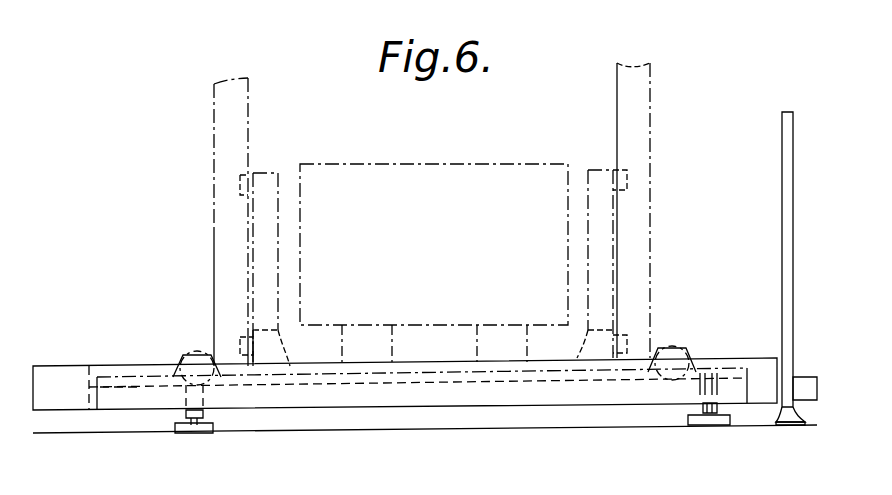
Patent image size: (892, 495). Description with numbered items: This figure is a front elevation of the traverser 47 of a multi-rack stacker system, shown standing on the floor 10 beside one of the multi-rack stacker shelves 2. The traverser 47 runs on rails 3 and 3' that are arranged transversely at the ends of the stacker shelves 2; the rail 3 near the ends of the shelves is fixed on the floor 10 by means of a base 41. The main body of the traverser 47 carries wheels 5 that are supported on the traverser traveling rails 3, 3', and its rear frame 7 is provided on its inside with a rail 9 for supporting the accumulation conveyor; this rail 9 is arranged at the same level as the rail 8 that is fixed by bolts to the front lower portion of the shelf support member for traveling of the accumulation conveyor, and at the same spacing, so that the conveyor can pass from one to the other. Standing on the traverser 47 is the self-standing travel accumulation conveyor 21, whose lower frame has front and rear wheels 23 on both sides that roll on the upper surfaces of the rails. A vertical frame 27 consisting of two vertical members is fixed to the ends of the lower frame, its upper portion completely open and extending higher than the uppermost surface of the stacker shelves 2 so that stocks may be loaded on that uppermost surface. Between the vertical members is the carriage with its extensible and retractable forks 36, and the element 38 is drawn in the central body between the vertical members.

The multi-rack stacker shelves 2 is at (781, 231).
The rail 3 is at (727, 435).
The rail 3' is at (205, 442).
The wheels 5 is at (192, 412).
The rear frame 7 is at (433, 395).
The rails 8 is at (803, 385).
The rails 9 is at (120, 385).
The floor 10 is at (122, 428).
The self-standing travel accumulation conveyor 21 is at (214, 236).
The front and rear wheels 23 is at (198, 352).
The vertical frame 27 is at (248, 122).
The extensible and retractable forks 36 is at (392, 342).
The housing 38 is at (480, 165).
The base 41 is at (215, 428).
The traverser 47 is at (58, 370).